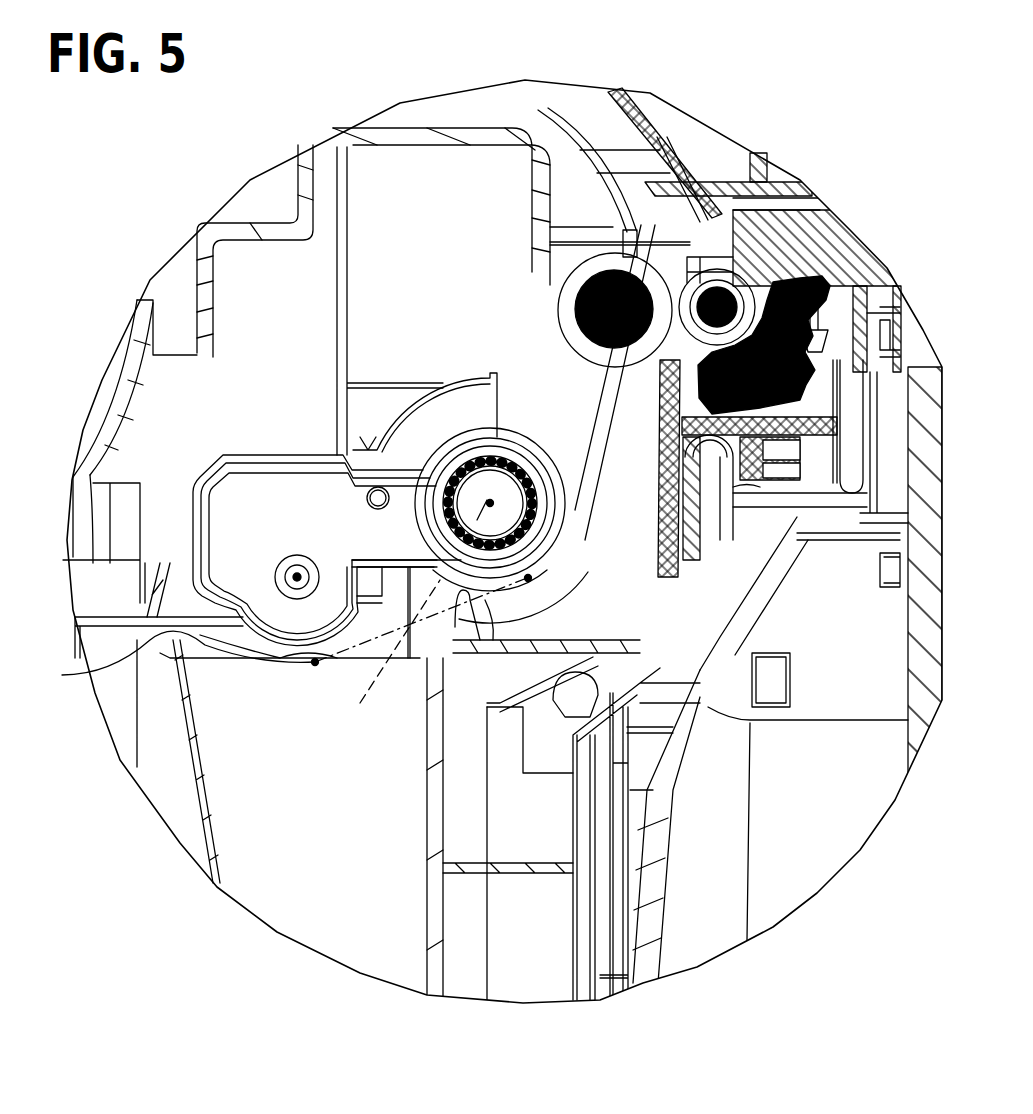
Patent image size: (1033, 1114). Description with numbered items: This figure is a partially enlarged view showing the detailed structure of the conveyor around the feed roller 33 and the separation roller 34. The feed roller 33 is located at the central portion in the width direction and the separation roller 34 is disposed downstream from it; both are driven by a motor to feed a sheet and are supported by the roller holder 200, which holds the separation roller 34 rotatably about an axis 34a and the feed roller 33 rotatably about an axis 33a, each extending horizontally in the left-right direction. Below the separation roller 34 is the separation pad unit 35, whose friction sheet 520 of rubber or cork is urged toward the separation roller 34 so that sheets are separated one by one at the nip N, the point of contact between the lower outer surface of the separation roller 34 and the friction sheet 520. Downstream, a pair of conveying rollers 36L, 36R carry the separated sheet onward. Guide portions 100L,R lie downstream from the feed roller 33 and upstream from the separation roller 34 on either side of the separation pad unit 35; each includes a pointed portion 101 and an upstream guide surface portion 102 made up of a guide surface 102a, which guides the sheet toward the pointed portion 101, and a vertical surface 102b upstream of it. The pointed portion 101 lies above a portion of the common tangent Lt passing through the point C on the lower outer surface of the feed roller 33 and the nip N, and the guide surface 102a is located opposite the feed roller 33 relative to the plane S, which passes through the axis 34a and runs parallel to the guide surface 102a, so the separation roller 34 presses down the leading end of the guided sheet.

The guide portions 100L,R is at (394, 599).
The roller holder 200 is at (232, 500).
The feed roller 33 is at (248, 645).
The axis of the feed roller 33a is at (295, 569).
The separation roller 34 is at (518, 395).
The axis of the separation roller 34a is at (489, 500).
The separation pad unit 35 is at (418, 527).
The friction sheet 520 is at (386, 583).
The conveying roller 36L is at (566, 262).
The conveying roller 36R is at (748, 300).
The pointed portion 101 is at (497, 630).
The guide surface portion 102 is at (300, 913).
The guide surface 102a is at (407, 673).
The vertical surface 102b is at (423, 723).
The common tangent Lt is at (172, 660).
The plane S is at (372, 678).
The point C is at (312, 661).
The nip N is at (528, 580).